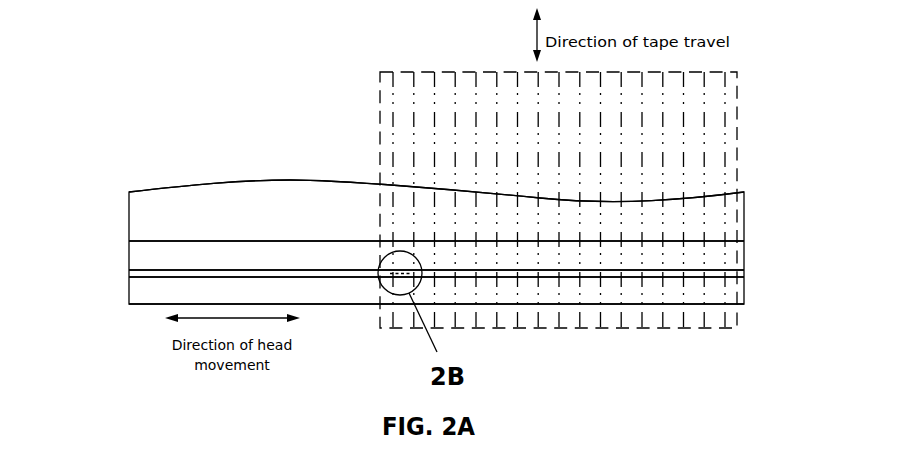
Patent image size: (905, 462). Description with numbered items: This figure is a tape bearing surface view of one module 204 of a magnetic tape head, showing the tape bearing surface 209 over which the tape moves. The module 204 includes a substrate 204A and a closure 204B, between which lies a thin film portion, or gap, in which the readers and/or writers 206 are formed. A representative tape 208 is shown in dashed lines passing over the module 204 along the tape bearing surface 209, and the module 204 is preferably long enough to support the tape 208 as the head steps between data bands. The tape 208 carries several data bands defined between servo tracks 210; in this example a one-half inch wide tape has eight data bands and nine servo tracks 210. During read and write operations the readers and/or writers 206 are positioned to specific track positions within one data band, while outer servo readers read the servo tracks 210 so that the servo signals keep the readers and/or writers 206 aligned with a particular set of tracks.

The module 204 is at (168, 174).
The substrate 204A is at (247, 181).
The closure 204B is at (129, 292).
The readers and/or writers 206 is at (384, 272).
The tape 208 is at (380, 73).
The tape bearing surface 209 is at (297, 258).
The servo tracks 210 is at (470, 148).